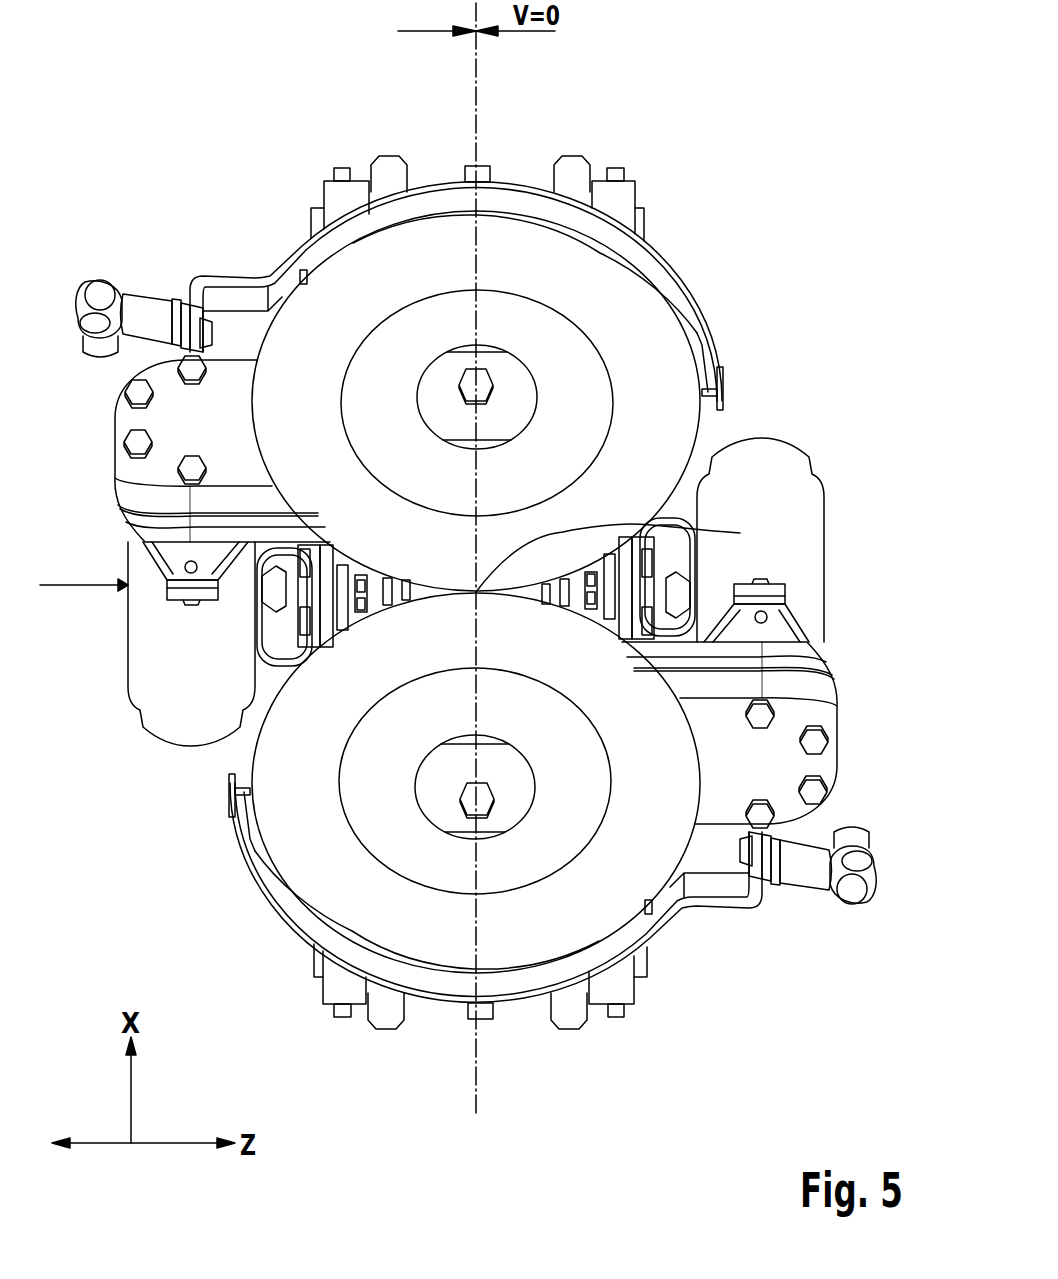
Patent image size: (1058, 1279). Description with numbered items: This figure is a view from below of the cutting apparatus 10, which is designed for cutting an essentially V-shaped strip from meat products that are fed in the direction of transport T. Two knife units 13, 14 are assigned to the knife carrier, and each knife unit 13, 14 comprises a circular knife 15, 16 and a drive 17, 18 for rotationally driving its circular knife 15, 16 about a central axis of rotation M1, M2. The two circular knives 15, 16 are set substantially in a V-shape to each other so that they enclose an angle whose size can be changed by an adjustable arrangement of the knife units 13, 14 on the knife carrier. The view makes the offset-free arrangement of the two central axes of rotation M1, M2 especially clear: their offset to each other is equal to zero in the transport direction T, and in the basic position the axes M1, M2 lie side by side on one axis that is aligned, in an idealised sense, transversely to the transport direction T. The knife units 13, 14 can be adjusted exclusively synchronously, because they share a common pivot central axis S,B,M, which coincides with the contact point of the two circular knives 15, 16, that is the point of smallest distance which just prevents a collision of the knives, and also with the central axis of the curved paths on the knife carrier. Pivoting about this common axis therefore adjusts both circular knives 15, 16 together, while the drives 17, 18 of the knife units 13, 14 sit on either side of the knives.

The cutting apparatus 10 is at (724, 136).
The knife unit 13 is at (851, 742).
The knife unit 14 is at (100, 416).
The circular knife 15 is at (273, 772).
The circular knife 16 is at (680, 399).
The drive 17 is at (805, 567).
The drive 18 is at (140, 637).
The pivot central axis, contact point and central axis S,B,M is at (740, 533).
The direction of transport T is at (84, 570).
The central axis of rotation M1 is at (478, 1106).
The central axis of rotation M2 is at (478, 63).